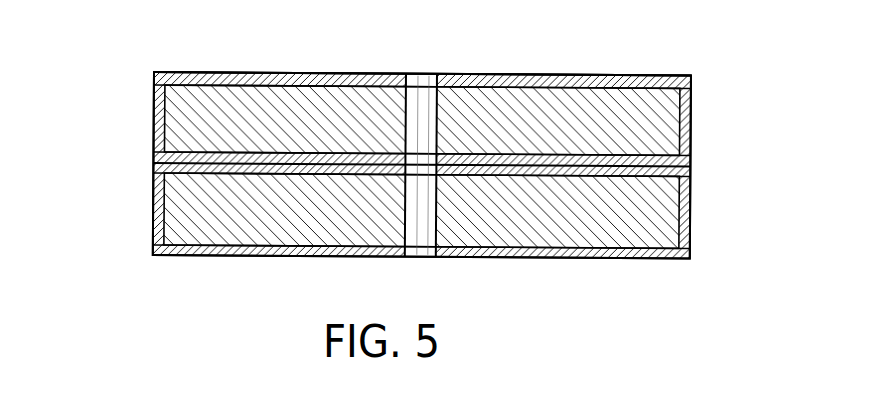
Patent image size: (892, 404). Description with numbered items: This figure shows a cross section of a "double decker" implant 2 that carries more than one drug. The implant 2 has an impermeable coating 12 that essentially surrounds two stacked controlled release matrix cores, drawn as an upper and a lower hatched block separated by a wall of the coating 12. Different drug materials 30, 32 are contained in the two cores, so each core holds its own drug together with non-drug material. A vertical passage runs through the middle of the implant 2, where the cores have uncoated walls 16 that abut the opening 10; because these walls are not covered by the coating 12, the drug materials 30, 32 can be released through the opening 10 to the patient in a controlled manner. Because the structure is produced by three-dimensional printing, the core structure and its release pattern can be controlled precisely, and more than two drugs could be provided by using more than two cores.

The implant 2 is at (629, 68).
The opening 10 is at (421, 252).
The impermeable coating 12 is at (312, 73).
The uncoated wall 16 is at (408, 103).
The first drug material 30 is at (184, 109).
The second drug material 32 is at (184, 201).